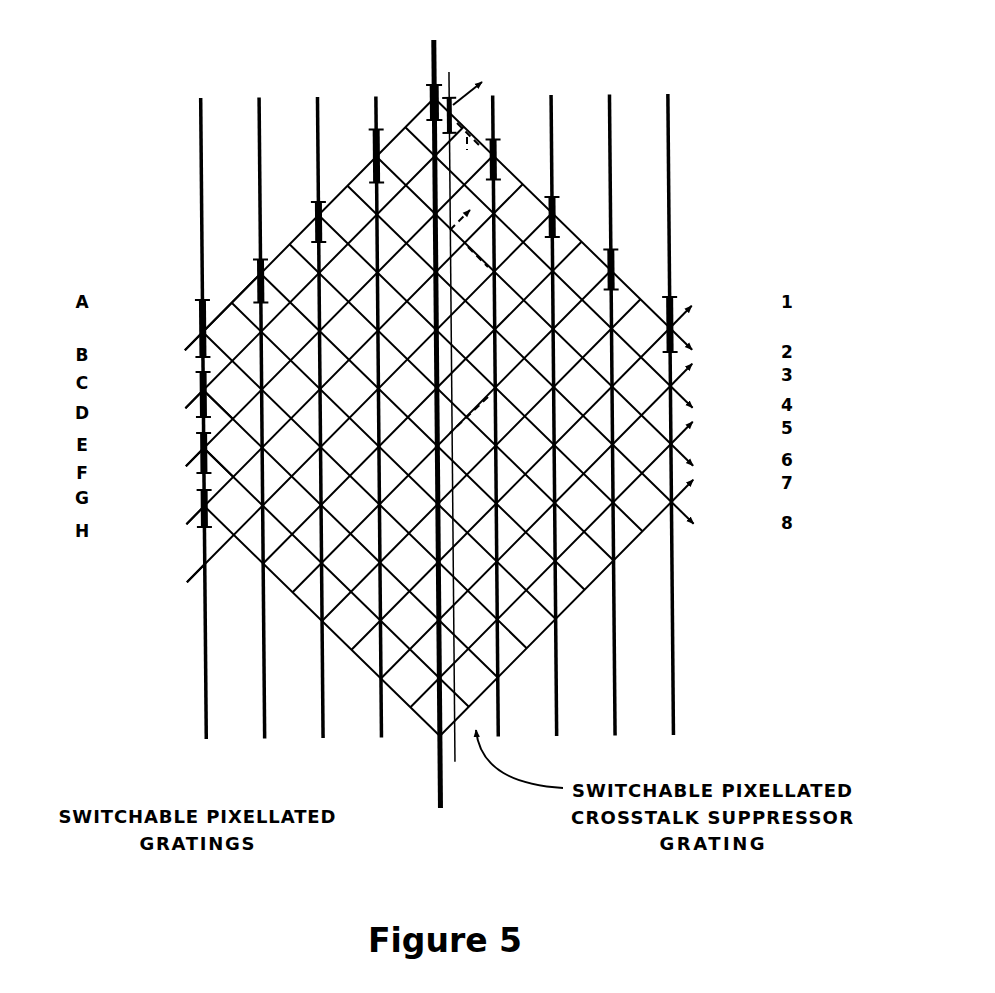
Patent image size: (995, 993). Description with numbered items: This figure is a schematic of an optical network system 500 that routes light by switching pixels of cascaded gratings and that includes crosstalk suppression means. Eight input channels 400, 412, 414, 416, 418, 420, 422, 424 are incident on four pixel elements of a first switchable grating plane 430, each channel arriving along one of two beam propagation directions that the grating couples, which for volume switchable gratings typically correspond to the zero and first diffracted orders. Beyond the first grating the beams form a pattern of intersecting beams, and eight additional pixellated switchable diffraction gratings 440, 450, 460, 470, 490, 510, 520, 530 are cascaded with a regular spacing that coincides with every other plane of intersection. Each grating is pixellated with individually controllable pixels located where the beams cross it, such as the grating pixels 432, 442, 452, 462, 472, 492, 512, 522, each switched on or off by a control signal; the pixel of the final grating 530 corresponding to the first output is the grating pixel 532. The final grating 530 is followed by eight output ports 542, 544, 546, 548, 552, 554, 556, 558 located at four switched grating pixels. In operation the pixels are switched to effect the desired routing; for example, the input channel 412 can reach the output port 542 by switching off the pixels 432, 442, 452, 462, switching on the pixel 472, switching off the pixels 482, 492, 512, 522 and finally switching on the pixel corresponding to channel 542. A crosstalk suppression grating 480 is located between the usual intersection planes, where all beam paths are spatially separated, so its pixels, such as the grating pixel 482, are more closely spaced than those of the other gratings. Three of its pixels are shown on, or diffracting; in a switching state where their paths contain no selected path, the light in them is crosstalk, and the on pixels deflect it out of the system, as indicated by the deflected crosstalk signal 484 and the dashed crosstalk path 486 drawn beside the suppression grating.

The input channel 400 is at (199, 330).
The input channel 412 is at (196, 343).
The input channel 414 is at (197, 390).
The input channel 416 is at (197, 393).
The input channel 418 is at (197, 450).
The input channel 420 is at (197, 452).
The input channel 422 is at (197, 502).
The input channel 424 is at (194, 522).
The first switchable grating plane 430 is at (203, 713).
The grating pixel 432 is at (207, 328).
The pixellated switchable diffraction grating 440 is at (263, 713).
The grating pixel 442 is at (263, 270).
The pixellated switchable diffraction grating 450 is at (323, 713).
The grating pixel 452 is at (323, 210).
The pixellated switchable diffraction grating 460 is at (380, 713).
The grating pixel 462 is at (382, 147).
The pixellated switchable diffraction grating 470 is at (437, 762).
The grating pixel 472 is at (433, 90).
The crosstalk suppression grating 480 is at (458, 738).
The grating pixel 482 is at (453, 103).
The diffracted light path 484 is at (457, 108).
The crosstalk light path 486 is at (469, 278).
The pixellated switchable diffraction grating 490 is at (502, 713).
The grating pixel 492 is at (495, 158).
The system 500 is at (150, 120).
The pixellated switchable diffraction grating 510 is at (560, 713).
The grating pixel 512 is at (555, 215).
The pixellated switchable diffraction grating 520 is at (618, 713).
The grating pixel 522 is at (615, 268).
The final grating 530 is at (677, 713).
The switched grating pixel 532 is at (667, 310).
The output port 542 is at (682, 313).
The output port 544 is at (682, 340).
The output port 546 is at (683, 372).
The output port 548 is at (683, 398).
The output port 552 is at (683, 427).
The output port 554 is at (683, 453).
The output port 556 is at (688, 483).
The output port 558 is at (683, 510).